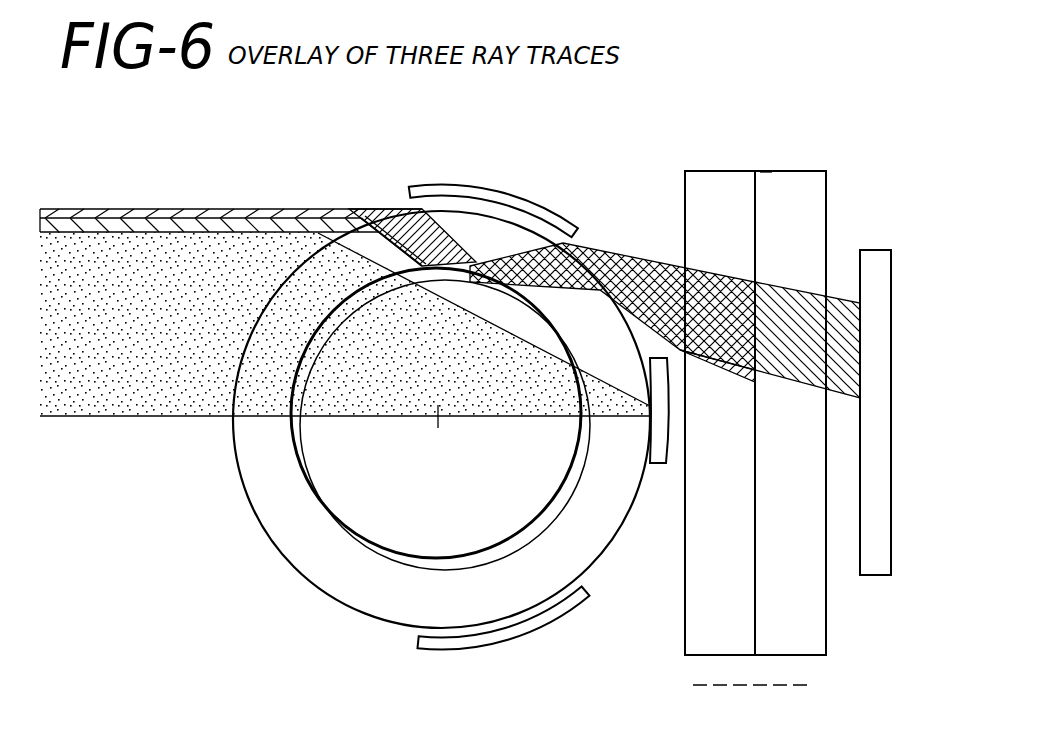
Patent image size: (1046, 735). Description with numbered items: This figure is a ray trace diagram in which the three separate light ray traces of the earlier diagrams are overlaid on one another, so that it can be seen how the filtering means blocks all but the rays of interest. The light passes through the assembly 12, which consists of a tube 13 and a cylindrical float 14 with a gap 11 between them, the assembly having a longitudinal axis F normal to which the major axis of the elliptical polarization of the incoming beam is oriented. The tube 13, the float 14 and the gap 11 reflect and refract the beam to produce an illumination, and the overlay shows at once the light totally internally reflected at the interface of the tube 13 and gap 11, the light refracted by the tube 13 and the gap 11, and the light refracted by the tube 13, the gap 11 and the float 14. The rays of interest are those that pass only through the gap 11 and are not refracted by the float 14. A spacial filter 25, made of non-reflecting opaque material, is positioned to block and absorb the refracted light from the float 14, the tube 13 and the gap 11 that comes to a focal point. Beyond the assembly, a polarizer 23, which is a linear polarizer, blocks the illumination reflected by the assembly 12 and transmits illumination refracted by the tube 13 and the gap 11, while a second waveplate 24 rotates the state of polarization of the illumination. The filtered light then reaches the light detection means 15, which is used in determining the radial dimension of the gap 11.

The gap 11 is at (321, 499).
The assembly 12 is at (376, 190).
The tube 13 is at (315, 566).
The cylindrical float 14 is at (323, 467).
The light detection means 15 is at (870, 250).
The polarizer 23 is at (697, 655).
The second waveplate 24 is at (805, 655).
The spacial filter 25 is at (527, 198).
The longitudinal axis F is at (437, 424).